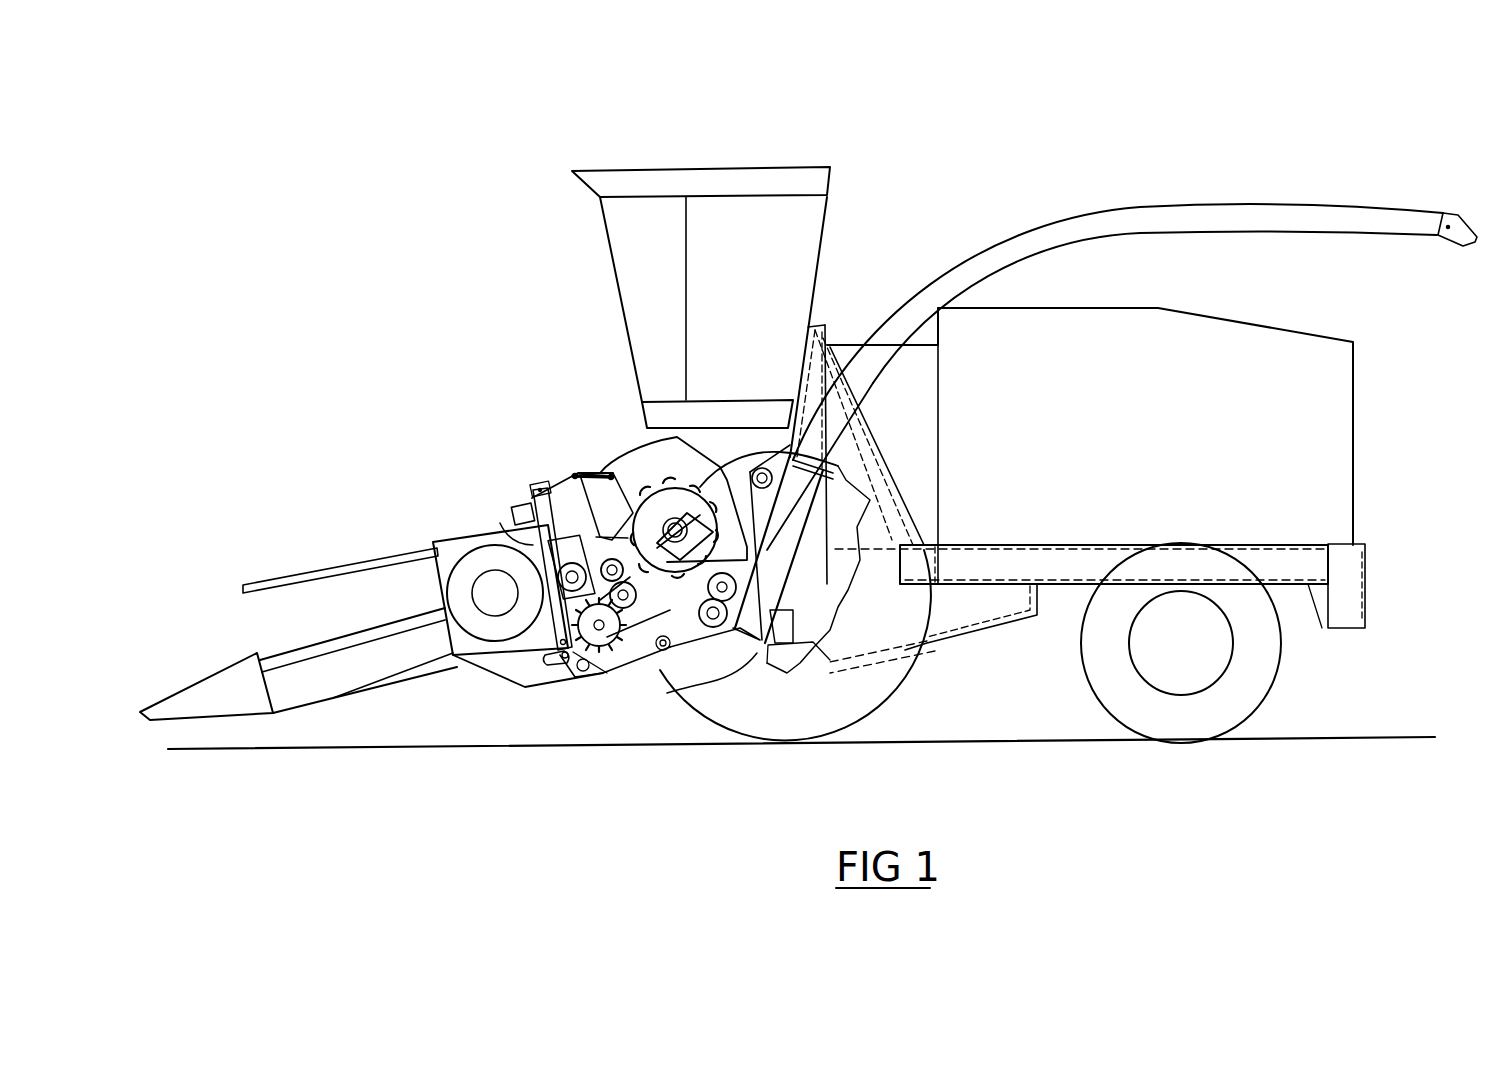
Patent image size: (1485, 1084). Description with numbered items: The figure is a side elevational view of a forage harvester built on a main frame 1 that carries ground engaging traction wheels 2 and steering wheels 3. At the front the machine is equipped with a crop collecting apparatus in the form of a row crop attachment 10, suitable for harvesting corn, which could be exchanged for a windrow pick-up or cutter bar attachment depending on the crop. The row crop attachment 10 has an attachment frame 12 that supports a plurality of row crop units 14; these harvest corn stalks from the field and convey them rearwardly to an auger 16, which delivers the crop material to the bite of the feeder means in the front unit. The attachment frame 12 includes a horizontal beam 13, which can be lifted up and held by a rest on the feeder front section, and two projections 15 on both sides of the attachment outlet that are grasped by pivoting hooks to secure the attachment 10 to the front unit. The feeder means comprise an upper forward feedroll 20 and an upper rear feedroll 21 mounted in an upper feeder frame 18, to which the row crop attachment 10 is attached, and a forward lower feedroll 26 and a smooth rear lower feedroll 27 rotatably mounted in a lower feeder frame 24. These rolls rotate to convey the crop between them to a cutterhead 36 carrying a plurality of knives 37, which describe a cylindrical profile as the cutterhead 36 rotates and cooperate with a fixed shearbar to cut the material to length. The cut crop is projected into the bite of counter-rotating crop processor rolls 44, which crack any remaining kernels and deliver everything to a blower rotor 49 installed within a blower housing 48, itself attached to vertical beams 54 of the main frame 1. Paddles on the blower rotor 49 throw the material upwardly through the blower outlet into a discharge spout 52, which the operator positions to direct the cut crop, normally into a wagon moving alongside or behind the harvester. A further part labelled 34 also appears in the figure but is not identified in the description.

The main frame 1 is at (995, 640).
The ground engaging traction wheels 2 is at (763, 717).
The steering wheels 3 is at (1180, 717).
The row crop attachment 10 is at (330, 546).
The attachment frame 12 is at (493, 665).
The horizontal beam 13 is at (518, 510).
The row crop units 14 is at (312, 682).
The projections 15 is at (558, 672).
The auger 16 is at (470, 550).
The upper feeder frame 18 is at (567, 487).
The upper forward feedroll 20 is at (553, 495).
The upper rear feedroll 21 is at (610, 560).
The lower feeder frame 24 is at (626, 672).
The forward lower feedroll 26 is at (607, 633).
The rear lower feedroll 27 is at (626, 603).
The drive housing plate 34 is at (606, 454).
The cutterhead 36 is at (645, 485).
The knives 37 is at (690, 487).
The crop processor rolls 44 is at (710, 627).
The blower housing 48 is at (773, 577).
The blower rotor 49 is at (777, 573).
The discharge spout 52 is at (1150, 218).
The vertical beams 54 is at (827, 325).